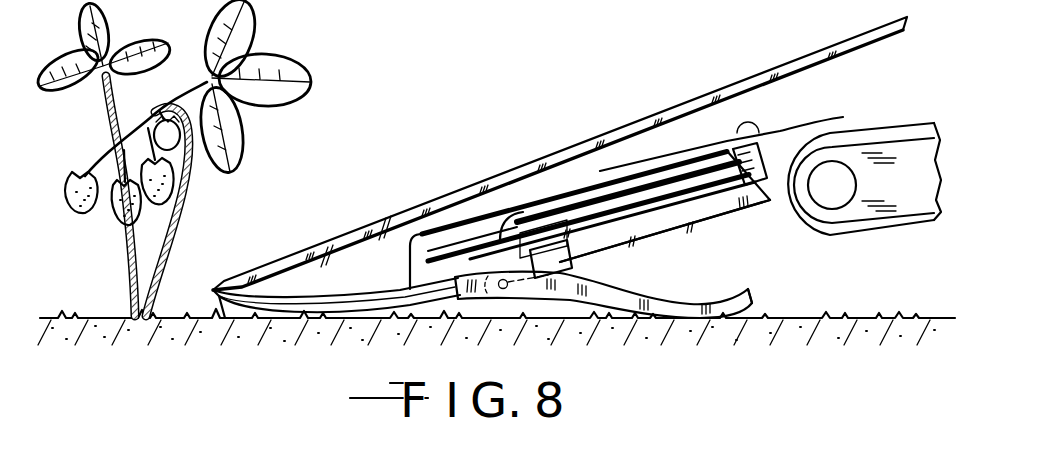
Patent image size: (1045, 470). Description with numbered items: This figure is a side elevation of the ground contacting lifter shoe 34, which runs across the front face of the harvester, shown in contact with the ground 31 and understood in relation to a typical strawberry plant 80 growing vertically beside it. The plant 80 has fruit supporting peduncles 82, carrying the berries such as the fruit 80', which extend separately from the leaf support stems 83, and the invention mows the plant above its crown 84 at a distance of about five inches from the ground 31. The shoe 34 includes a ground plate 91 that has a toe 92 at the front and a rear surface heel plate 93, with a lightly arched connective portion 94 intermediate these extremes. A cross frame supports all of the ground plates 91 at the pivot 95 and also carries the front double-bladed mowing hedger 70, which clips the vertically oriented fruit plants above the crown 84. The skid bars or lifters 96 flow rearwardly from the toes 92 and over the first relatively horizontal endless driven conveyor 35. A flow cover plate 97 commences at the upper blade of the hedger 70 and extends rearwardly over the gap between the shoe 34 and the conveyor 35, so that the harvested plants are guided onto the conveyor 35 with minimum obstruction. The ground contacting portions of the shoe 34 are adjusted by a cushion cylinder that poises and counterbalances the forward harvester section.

The ground 31 is at (833, 313).
The lifter shoe 34 is at (564, 203).
The first relatively horizontal endless driven conveyor 35 is at (884, 128).
The front double-bladed mowing hedger 70 is at (474, 238).
The strawberry plant 80 is at (210, 158).
The strawberry fruit 80' is at (65, 214).
The fruit supporting peduncle 82 is at (168, 243).
The leaf support stem 83 is at (103, 98).
The crown 84 is at (147, 300).
The ground plate 91 is at (353, 320).
The toe 92 is at (226, 319).
The rear surface heel plate 93 is at (693, 312).
The lightly arched connective portion 94 is at (553, 300).
The pivot 95 is at (498, 290).
The skid bar or lifter 96 is at (714, 97).
The flow cover plate 97 is at (693, 153).